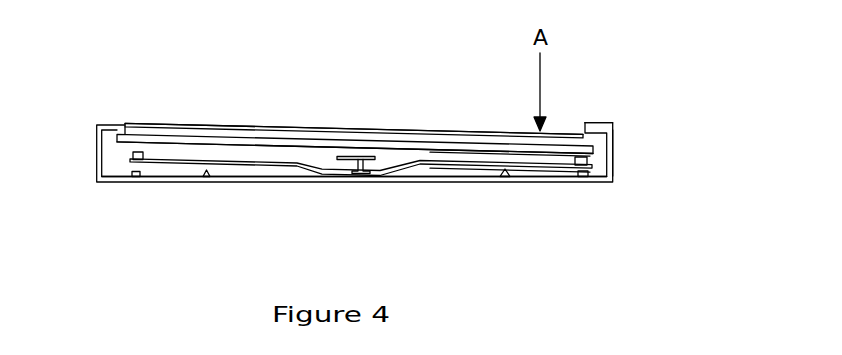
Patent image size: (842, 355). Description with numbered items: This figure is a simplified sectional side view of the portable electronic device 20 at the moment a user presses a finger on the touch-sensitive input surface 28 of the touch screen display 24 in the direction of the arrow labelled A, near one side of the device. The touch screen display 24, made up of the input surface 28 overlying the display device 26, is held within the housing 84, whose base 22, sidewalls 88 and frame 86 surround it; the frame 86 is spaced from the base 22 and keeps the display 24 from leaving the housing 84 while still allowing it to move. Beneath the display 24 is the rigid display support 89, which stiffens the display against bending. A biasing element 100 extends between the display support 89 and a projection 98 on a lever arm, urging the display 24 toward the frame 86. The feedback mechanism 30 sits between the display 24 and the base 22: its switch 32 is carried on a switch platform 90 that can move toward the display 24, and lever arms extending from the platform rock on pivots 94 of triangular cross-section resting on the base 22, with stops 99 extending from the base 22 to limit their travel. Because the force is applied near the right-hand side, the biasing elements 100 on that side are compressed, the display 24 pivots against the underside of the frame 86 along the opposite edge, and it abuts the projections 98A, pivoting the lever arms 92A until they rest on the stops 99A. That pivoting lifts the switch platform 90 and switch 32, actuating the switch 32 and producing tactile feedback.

The portable electronic device 20 is at (360, 46).
The base 22 is at (280, 168).
The touch screen display 24 is at (159, 120).
The display device 26 is at (388, 130).
The touch-sensitive input surface 28 is at (450, 131).
The feedback mechanism 30 is at (172, 178).
The switch 32 is at (365, 162).
The housing 84 is at (608, 177).
The frame 86 is at (590, 123).
The sidewalls 88 is at (612, 146).
The display support 89 is at (205, 142).
The switch platform 90 is at (357, 160).
The lever arms 92A is at (467, 162).
The pivot 94 is at (205, 176).
The projection 98 is at (133, 158).
The projections 98A is at (577, 161).
The stops 99 is at (133, 176).
The stops 99A is at (583, 180).
The biasing element 100 is at (140, 148).